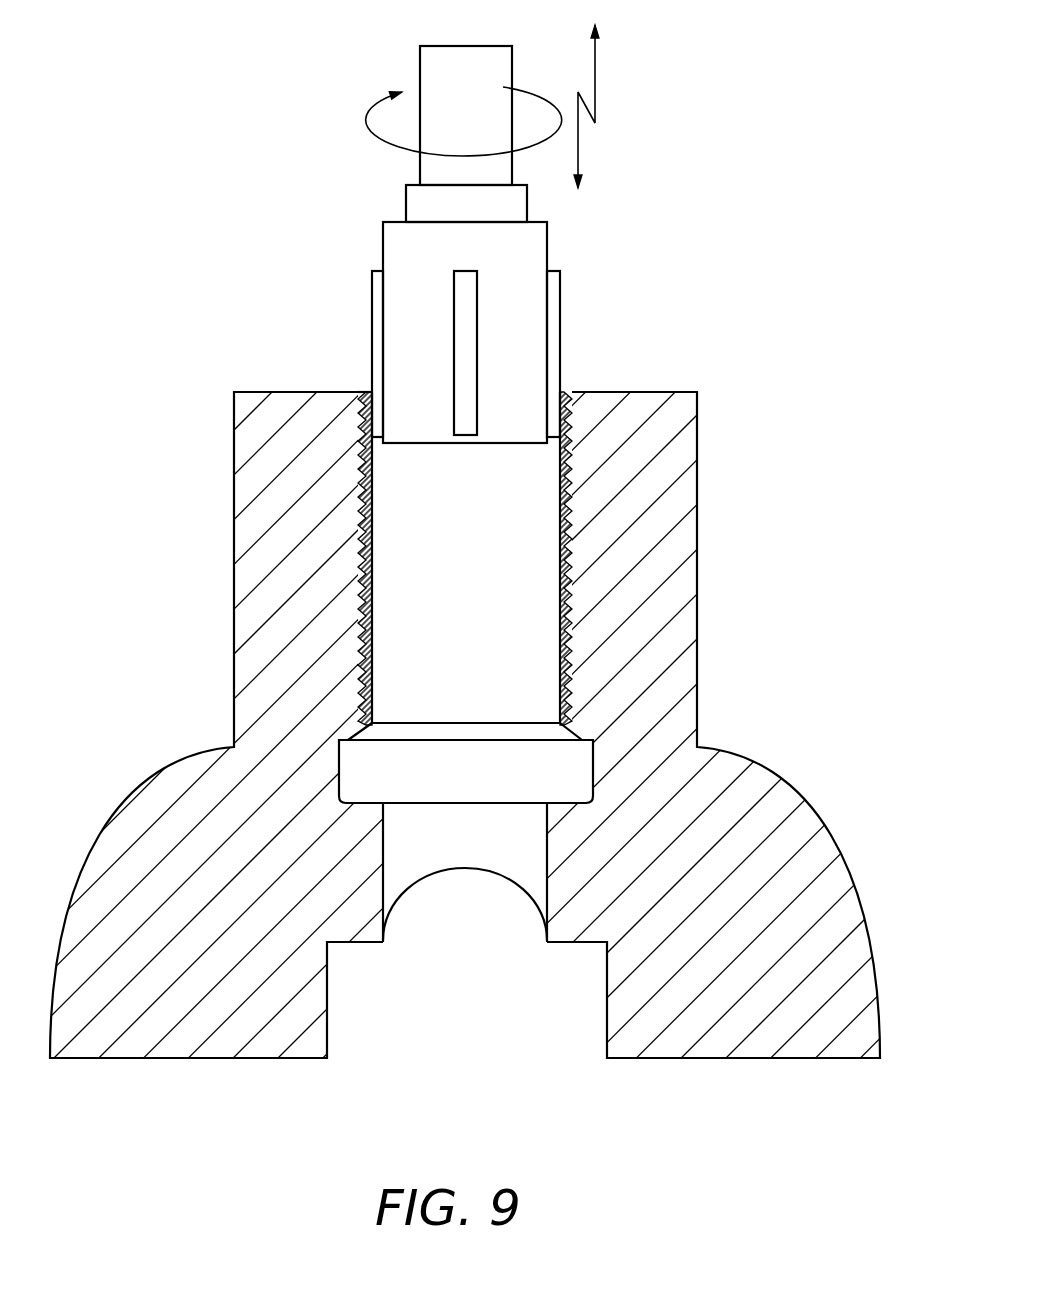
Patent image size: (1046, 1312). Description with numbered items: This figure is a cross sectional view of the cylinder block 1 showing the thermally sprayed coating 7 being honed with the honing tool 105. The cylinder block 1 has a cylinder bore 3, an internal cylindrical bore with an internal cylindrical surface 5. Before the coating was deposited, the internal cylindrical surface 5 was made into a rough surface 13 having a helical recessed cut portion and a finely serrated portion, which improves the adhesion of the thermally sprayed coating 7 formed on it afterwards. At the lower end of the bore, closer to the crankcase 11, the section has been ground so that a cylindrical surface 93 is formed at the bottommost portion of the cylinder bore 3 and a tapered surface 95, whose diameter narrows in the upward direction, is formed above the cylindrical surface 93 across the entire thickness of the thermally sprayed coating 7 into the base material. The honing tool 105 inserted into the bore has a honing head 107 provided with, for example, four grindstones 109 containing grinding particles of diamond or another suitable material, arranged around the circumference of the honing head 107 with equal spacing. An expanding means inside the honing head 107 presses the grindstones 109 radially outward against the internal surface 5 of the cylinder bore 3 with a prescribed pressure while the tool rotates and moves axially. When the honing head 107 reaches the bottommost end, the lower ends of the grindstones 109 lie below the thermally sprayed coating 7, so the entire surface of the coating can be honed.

The cylinder block 1 is at (697, 440).
The cylinder bore 3 is at (476, 552).
The internal cylindrical surface 5 is at (362, 605).
The thermally sprayed coating 7 is at (368, 391).
The crankcase 11 is at (479, 1009).
The rough surface 13 is at (362, 522).
The cylindrical surface 93 is at (340, 780).
The tapered surface 95 is at (357, 733).
The honing tool 105 is at (348, 157).
The honing head 107 is at (515, 343).
The grindstones 109 is at (465, 280).